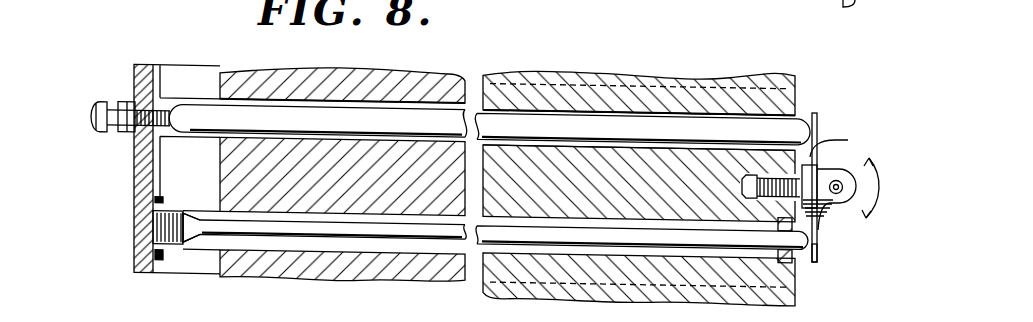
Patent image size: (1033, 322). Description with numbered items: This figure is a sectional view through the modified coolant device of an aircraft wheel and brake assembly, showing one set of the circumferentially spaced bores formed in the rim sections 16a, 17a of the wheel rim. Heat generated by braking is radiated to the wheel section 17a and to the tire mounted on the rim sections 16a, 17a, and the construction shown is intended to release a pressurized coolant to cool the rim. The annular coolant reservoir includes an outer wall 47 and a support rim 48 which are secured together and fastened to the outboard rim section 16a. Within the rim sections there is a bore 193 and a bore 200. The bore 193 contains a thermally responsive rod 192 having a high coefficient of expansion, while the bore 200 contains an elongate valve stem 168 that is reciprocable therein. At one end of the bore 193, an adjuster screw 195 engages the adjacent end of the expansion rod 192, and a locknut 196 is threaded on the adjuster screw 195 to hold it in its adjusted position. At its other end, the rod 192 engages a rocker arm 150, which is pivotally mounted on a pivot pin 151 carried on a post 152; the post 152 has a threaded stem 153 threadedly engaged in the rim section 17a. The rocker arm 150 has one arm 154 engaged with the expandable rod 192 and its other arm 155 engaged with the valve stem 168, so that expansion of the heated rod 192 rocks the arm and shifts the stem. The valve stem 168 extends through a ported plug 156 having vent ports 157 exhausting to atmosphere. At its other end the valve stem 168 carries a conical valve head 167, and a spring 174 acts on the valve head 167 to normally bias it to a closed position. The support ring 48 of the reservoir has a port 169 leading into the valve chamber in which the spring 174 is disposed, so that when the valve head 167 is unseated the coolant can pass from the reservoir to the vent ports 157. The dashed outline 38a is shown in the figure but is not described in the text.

The outboard rim section 16a is at (333, 80).
The wheel section 17a is at (513, 80).
The hidden guide member 38a is at (743, 78).
The outer wall 47 is at (140, 250).
The support rim 48 is at (172, 172).
The rocker arm 150 is at (824, 168).
The pivot pin 151 is at (843, 187).
The post 152 is at (848, 140).
The threaded stem 153 is at (745, 176).
The arm 154 is at (818, 122).
The other arm 155 is at (818, 257).
The ported plug 156 is at (800, 258).
The vent ports 157 is at (823, 225).
The conical valve head 167 is at (212, 233).
The valve stem 168 is at (588, 233).
The port 169 is at (173, 242).
The spring 174 is at (158, 223).
The thermally responsive rod 192 is at (489, 124).
The bore 193 is at (627, 116).
The adjuster screw 195 is at (133, 133).
The locknut 196 is at (128, 100).
The bore 200 is at (338, 250).